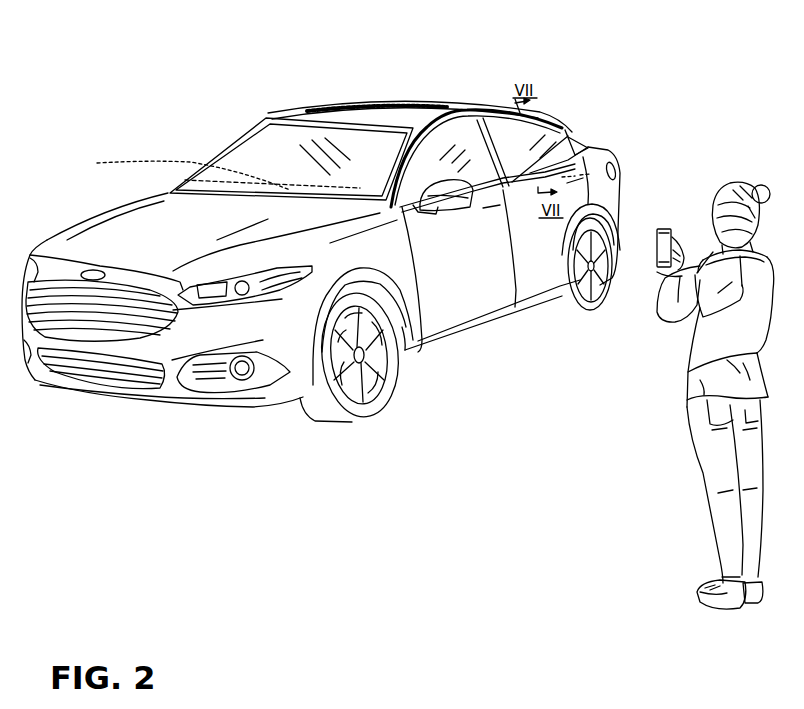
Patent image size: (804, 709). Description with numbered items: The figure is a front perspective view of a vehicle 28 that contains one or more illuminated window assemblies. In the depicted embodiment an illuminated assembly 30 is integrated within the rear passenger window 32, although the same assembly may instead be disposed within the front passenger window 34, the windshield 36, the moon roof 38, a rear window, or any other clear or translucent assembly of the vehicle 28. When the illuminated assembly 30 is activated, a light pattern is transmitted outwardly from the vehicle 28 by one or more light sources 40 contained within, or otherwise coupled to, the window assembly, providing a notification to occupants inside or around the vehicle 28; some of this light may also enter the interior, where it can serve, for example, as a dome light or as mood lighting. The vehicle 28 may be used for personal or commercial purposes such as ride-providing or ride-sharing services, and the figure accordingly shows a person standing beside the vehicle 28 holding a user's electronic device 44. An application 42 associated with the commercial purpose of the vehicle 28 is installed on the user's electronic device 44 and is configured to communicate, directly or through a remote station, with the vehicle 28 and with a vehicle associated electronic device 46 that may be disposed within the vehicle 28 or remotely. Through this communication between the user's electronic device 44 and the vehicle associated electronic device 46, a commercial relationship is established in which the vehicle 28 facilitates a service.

The vehicle 28 is at (321, 284).
The illuminated assembly 30 is at (562, 177).
The rear passenger window 32 is at (563, 130).
The front passenger window 34 is at (438, 158).
The windshield 36 is at (237, 160).
The moon roof 38 is at (383, 99).
The light sources 40 is at (597, 145).
The application 42 is at (676, 222).
The user's electronic device 44 is at (661, 223).
The vehicle associated electronic device 46 is at (182, 166).